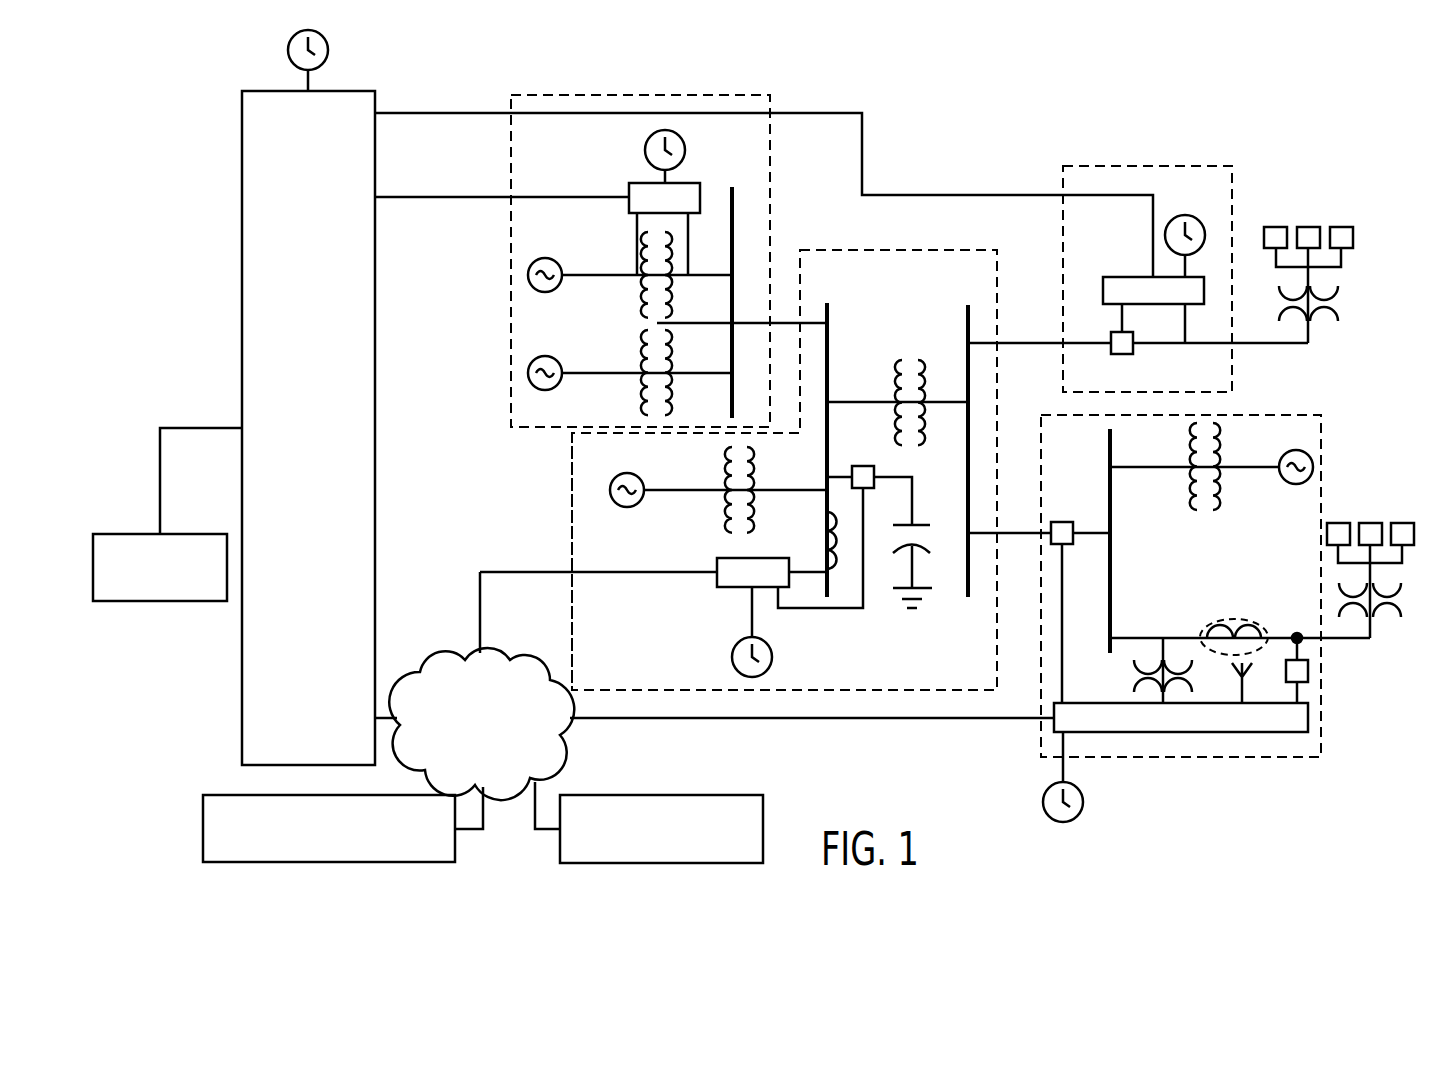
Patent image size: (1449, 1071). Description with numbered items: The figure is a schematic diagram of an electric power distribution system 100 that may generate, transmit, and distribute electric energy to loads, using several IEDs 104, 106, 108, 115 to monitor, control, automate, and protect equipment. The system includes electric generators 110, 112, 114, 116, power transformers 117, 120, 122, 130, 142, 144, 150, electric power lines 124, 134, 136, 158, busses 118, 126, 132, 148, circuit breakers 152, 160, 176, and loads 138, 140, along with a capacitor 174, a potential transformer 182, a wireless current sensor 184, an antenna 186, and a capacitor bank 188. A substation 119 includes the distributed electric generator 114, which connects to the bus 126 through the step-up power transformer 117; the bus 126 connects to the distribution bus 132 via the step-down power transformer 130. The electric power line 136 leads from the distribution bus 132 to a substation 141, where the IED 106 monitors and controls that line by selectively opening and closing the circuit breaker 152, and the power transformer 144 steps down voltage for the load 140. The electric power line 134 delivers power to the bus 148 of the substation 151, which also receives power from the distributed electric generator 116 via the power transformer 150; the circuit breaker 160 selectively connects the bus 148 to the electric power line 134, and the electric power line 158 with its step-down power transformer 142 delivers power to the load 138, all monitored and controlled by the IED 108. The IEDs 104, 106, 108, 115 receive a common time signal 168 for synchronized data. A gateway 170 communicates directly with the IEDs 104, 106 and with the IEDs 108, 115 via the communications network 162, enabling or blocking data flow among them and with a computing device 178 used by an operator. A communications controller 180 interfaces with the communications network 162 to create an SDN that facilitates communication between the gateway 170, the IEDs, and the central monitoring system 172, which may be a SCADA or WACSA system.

The electric power distribution system 100 is at (1310, 84).
The IED 104 is at (640, 183).
The IED 106 is at (1117, 277).
The IED 108 is at (1235, 732).
The electric generator 110 is at (535, 262).
The electric generator 112 is at (535, 360).
The electric generator 114 is at (617, 475).
The IED 115 is at (755, 557).
The electric generator 116 is at (1285, 485).
The power transformer 117 is at (727, 523).
The bus 118 is at (738, 190).
The substation 119 is at (570, 520).
The power transformer 120 is at (645, 308).
The power transformer 122 is at (645, 402).
The electric power line 124 is at (783, 322).
The bus 126 is at (829, 330).
The power transformer 130 is at (905, 362).
The distribution bus 132 is at (960, 580).
The electric power line 134 is at (1005, 535).
The electric power line 136 is at (1090, 347).
The load 138 is at (1370, 523).
The load 140 is at (1341, 227).
The substation 141 is at (1088, 165).
The power transformer 142 is at (1400, 600).
The power transformer 144 is at (1340, 305).
The bus 148 is at (1106, 432).
The power transformer 150 is at (1215, 420).
The substation 151 is at (1300, 757).
The circuit breaker 152 is at (1122, 355).
The electric power line 158 is at (1345, 640).
The circuit breaker 160 is at (1072, 522).
The communications network 162 is at (432, 665).
The common time signal 168 is at (328, 50).
The gateway 170 is at (378, 428).
The central monitoring system 172 is at (203, 830).
The capacitor 174 is at (918, 523).
The circuit breaker 176 is at (855, 465).
The computing device 178 is at (158, 602).
The communications controller 180 is at (645, 795).
The potential transformer 182 is at (1140, 675).
The wireless current sensor 184 is at (1232, 620).
The antenna 186 is at (1250, 672).
The capacitor bank 188 is at (1310, 671).